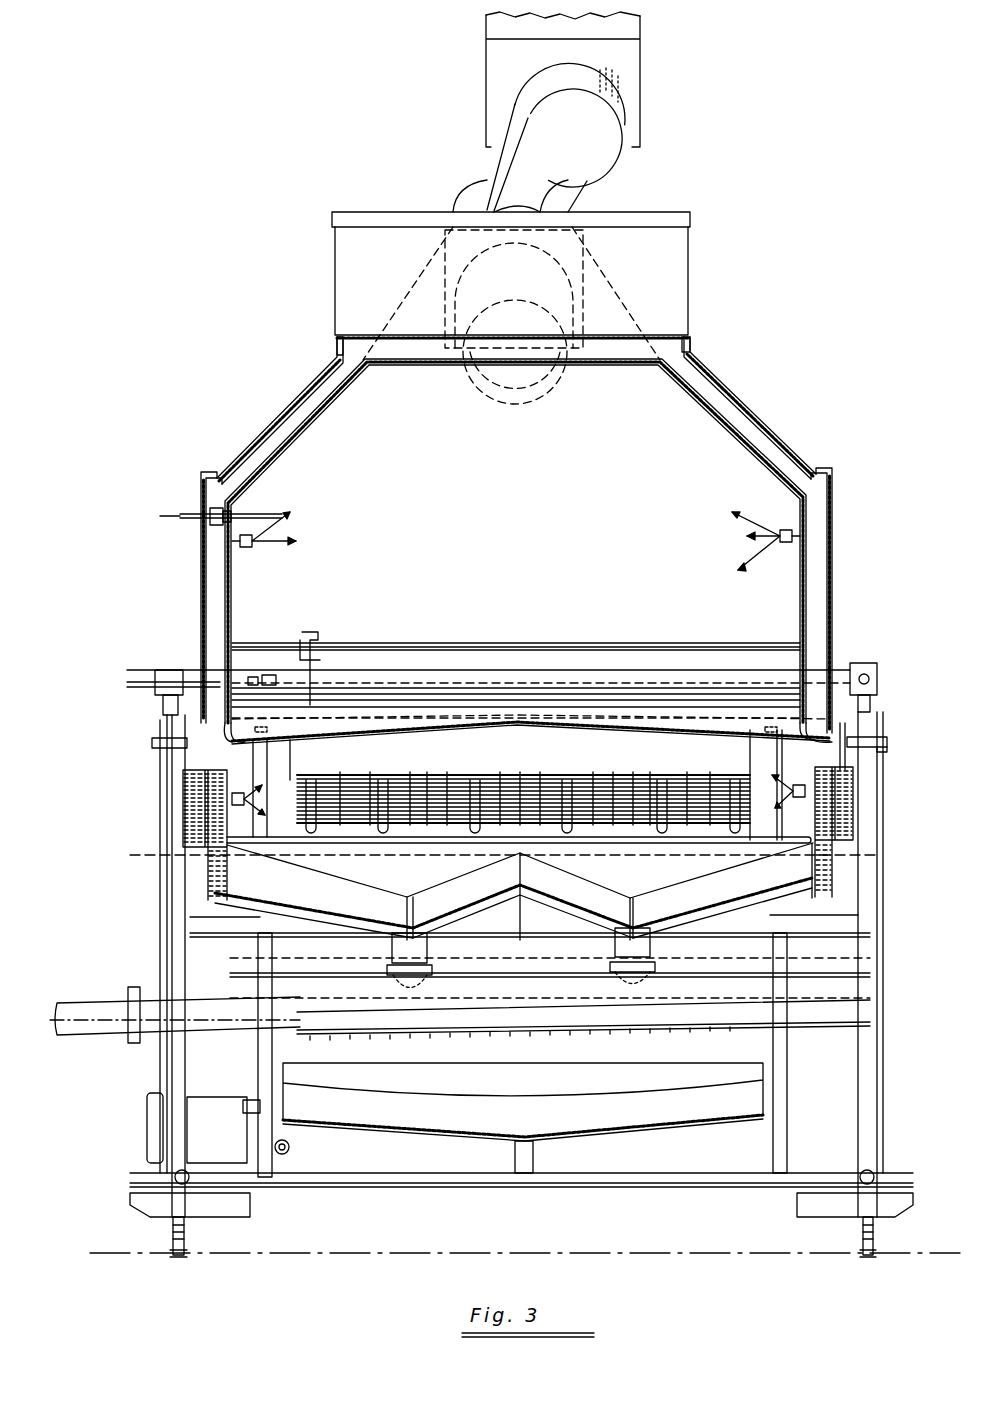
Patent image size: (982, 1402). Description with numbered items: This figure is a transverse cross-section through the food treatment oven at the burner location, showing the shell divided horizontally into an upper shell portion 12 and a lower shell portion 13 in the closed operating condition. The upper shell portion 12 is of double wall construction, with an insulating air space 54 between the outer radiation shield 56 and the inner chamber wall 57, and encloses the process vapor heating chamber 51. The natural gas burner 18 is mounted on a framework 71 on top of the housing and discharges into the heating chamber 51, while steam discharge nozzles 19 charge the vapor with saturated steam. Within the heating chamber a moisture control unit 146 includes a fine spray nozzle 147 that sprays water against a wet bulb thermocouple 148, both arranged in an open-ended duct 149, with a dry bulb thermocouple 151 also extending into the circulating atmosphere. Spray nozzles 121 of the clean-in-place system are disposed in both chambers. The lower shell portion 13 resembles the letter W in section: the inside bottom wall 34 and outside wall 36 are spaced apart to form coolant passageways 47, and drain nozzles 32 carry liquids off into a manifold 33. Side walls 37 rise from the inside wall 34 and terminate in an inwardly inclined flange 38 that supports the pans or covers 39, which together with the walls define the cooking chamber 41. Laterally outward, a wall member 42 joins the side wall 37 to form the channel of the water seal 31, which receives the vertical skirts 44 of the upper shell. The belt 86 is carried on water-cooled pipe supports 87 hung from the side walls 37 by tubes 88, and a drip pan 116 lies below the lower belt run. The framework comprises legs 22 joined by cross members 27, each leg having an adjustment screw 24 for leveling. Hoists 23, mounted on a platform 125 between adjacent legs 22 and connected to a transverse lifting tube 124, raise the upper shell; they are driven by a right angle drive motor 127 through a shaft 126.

The upper shell portion 12 is at (778, 430).
The lower shell portion 13 is at (180, 800).
The natural gas burner 18 is at (483, 98).
The steam discharge nozzles 19 is at (265, 768).
The legs 22 is at (160, 1108).
The hoists 23 is at (163, 1058).
The adjustment screw 24 is at (190, 1250).
The cross members 27 is at (835, 915).
The water seal 31 is at (843, 768).
The drain nozzles 32 is at (412, 930).
The manifold 33 is at (245, 1020).
The inside bottom wall 34 is at (340, 906).
The outside wall 36 is at (560, 928).
The side walls 37 is at (228, 815).
The inwardly inclined flange 38 is at (262, 748).
The pans or covers 39 is at (622, 722).
The cooking chamber 41 is at (525, 756).
The wall member 42 is at (855, 785).
The vertical skirts 44 is at (163, 700).
The coolant passageways 47 is at (740, 903).
The process vapor heating chamber 51 is at (525, 484).
The insulating air space 54 is at (215, 598).
The outer radiation shield 56 is at (203, 533).
The inner chamber wall 57 is at (800, 582).
The framework 71 is at (693, 275).
The belt 86 is at (432, 802).
The pipe supports 87 is at (698, 845).
The tubes 88 is at (430, 845).
The drip pan 116 is at (435, 1119).
The spray nozzles 121 is at (253, 547).
The lifting tube 124 is at (843, 668).
The platform 125 is at (252, 1200).
The shaft 126 is at (290, 1147).
The right angle drive motor 127 is at (217, 1108).
The moisture control unit 146 is at (316, 632).
The fine spray nozzle 147 is at (278, 657).
The wet bulb thermocouple 148 is at (250, 657).
The open-ended duct 149 is at (312, 635).
The dry bulb thermocouple 151 is at (244, 520).